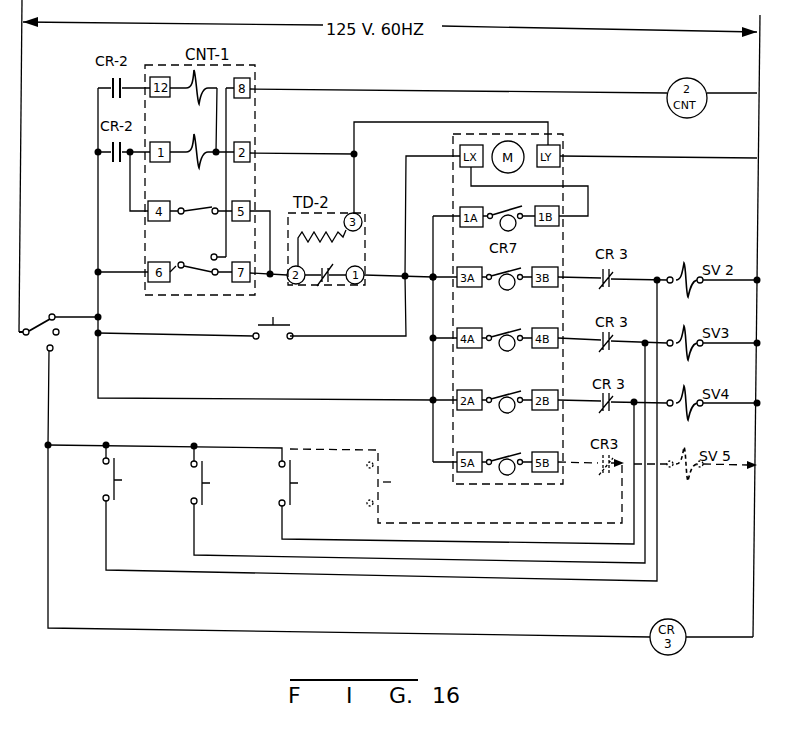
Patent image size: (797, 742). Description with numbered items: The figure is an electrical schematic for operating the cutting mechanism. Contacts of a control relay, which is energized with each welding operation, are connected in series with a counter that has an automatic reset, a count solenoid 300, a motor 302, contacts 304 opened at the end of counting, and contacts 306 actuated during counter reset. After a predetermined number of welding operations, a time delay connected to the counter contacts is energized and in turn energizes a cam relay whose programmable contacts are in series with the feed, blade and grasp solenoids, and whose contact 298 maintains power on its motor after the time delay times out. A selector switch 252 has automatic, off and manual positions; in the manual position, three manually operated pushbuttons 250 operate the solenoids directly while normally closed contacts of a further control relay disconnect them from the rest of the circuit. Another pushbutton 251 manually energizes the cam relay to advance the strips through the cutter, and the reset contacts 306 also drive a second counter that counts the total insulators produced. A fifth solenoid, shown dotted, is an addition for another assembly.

The manually operated pushbuttons 250 is at (214, 477).
The manually operated pushbutton 251 is at (283, 323).
The selector switch 252 is at (53, 321).
The contact 298 is at (503, 210).
The count solenoid 300 is at (206, 86).
The motor 302 is at (194, 142).
The contacts 304 is at (198, 202).
The contacts 306 is at (195, 260).